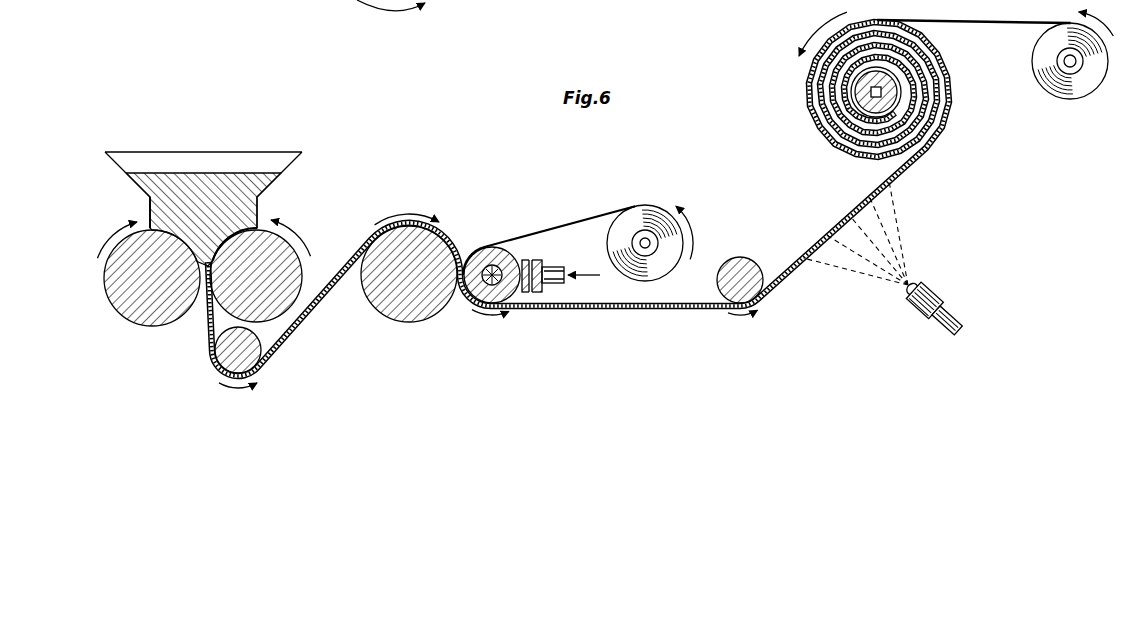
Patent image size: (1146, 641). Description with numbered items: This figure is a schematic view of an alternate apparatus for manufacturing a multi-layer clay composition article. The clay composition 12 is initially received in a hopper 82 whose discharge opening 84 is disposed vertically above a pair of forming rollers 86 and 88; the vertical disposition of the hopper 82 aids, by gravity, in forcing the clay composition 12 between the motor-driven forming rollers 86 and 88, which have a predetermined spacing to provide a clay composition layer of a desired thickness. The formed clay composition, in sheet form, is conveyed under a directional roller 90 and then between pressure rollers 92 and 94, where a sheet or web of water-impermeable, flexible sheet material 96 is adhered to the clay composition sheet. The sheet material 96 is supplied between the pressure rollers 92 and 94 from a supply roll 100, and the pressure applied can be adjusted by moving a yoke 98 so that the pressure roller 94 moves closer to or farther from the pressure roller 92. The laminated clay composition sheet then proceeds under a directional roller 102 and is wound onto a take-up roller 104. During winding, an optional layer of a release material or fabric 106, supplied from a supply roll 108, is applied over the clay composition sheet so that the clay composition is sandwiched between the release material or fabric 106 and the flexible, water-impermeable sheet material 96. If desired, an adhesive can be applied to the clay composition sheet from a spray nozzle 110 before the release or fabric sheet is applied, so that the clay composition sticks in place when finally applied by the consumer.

The clay composition 12 is at (198, 176).
The hopper 82 is at (150, 206).
The discharge opening 84 is at (256, 233).
The forming roller 86 is at (301, 268).
The forming roller 88 is at (136, 316).
The directional roller 90 is at (217, 351).
The pressure roller 92 is at (419, 315).
The pressure roller 94 is at (511, 300).
The water-impermeable flexible sheet material 96 is at (568, 222).
The yoke 98 is at (545, 262).
The supply roll 100 is at (683, 243).
The directional roller 102 is at (752, 262).
The take-up roller 104 is at (852, 93).
The release material or fabric 106 is at (972, 21).
The supply roll 108 is at (1064, 96).
The spray nozzle 110 is at (950, 304).